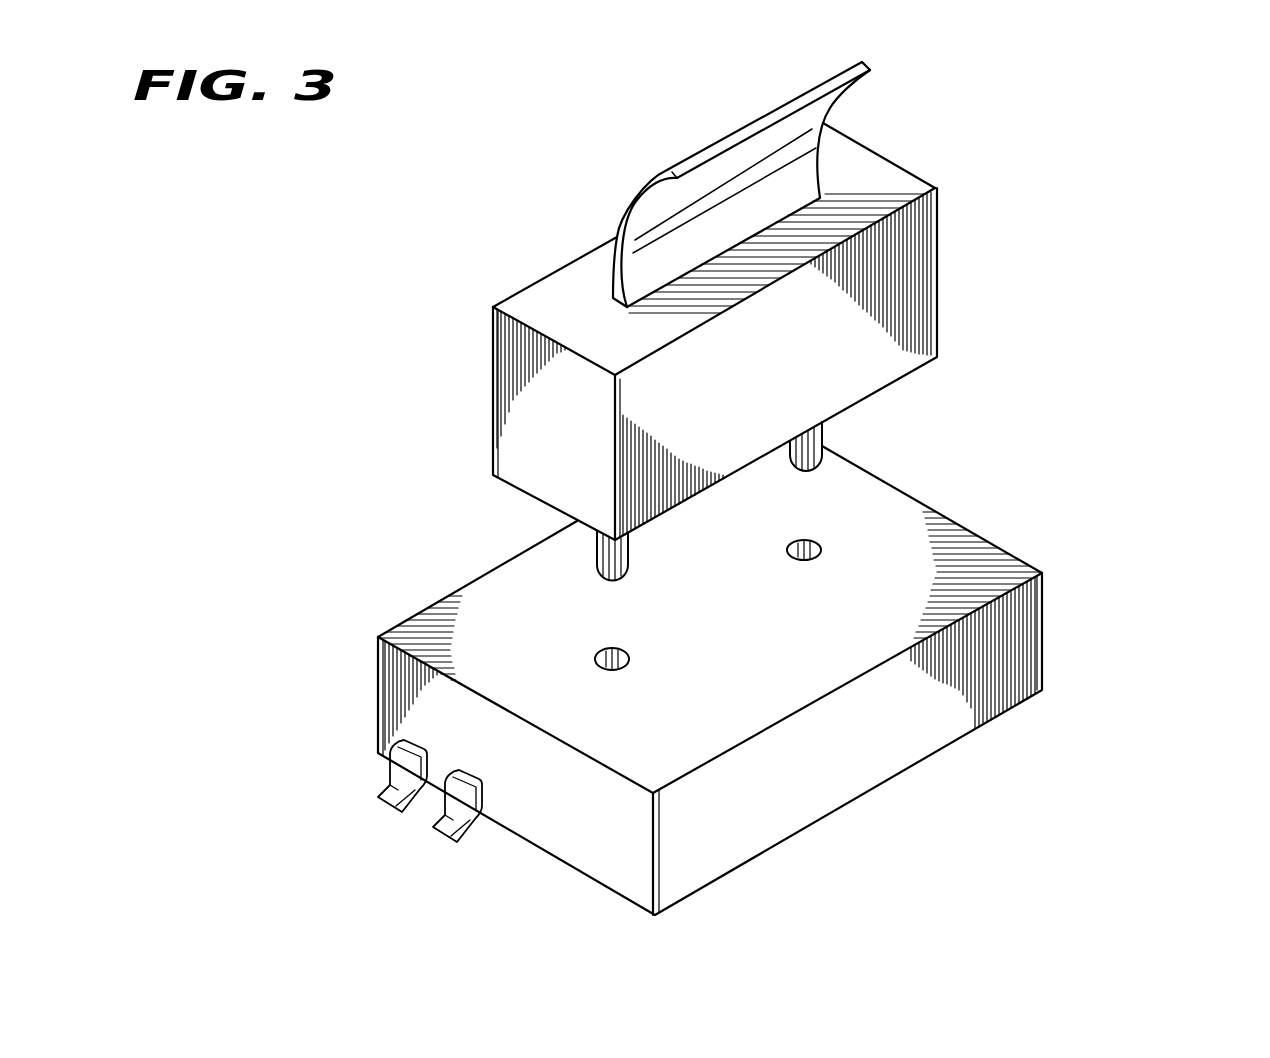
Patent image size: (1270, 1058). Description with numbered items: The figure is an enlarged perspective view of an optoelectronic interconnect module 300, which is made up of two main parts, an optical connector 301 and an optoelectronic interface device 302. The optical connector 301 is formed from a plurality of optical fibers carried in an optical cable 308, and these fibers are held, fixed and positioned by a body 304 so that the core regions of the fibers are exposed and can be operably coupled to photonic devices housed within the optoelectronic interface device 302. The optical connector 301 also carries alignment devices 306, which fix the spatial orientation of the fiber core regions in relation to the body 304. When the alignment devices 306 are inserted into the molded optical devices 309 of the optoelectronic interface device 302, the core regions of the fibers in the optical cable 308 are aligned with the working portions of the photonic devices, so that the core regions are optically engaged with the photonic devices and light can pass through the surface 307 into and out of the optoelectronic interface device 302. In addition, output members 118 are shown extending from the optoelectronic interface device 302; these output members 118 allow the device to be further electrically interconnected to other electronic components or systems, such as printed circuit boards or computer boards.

The optoelectronic interconnect module 300 is at (278, 195).
The optical connector 301 is at (1040, 195).
The optoelectronic interface device 302 is at (1120, 493).
The body 304 is at (543, 279).
The alignment devices 306 is at (632, 545).
The surface 307 is at (763, 649).
The optical cable 308 is at (629, 205).
The molded optical devices 309 is at (806, 540).
The output members 118 is at (443, 836).